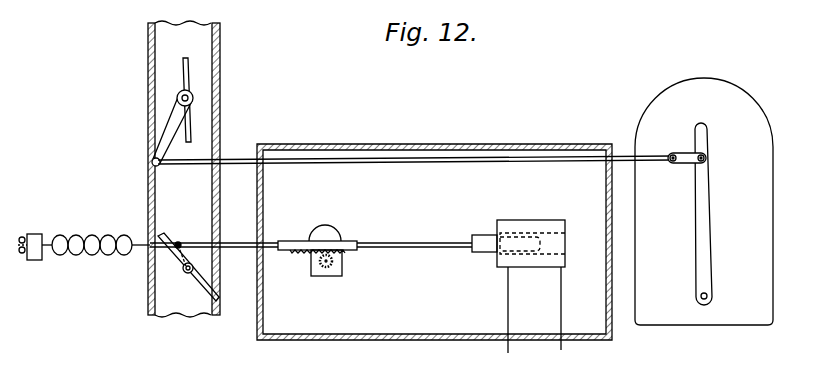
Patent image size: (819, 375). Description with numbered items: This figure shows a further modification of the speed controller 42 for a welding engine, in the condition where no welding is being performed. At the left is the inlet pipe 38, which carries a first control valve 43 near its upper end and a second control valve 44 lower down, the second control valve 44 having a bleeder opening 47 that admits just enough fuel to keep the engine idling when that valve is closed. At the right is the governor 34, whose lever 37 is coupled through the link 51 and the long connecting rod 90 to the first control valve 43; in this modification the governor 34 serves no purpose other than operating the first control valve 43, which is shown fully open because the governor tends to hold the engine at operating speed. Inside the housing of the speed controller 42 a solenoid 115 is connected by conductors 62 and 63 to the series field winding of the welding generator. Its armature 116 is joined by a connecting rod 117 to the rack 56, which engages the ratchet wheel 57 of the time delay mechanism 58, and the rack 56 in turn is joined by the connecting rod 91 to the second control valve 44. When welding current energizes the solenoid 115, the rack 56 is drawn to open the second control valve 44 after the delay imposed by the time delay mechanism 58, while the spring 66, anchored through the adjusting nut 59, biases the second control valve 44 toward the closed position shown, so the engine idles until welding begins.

The governor 34 is at (735, 83).
The lever 37 is at (708, 140).
The inlet pipe 38 is at (220, 102).
The speed controller 42 is at (380, 131).
The first control valve 43 is at (190, 77).
The second control valve 44 is at (200, 277).
The bleeder opening 47 is at (188, 272).
The link 51 is at (686, 166).
The rack 56 is at (282, 241).
The ratchet wheel 57 is at (333, 262).
The time delay mechanism 58 is at (330, 229).
The adjusting nut 59 is at (22, 236).
The conductor 62 is at (506, 346).
The conductor 63 is at (565, 344).
The spring 66 is at (85, 238).
The connecting rod 90 is at (479, 158).
The connecting rod 91 is at (233, 243).
The solenoid 115 is at (533, 220).
The armature 116 is at (483, 253).
The connecting rod 117 is at (410, 243).